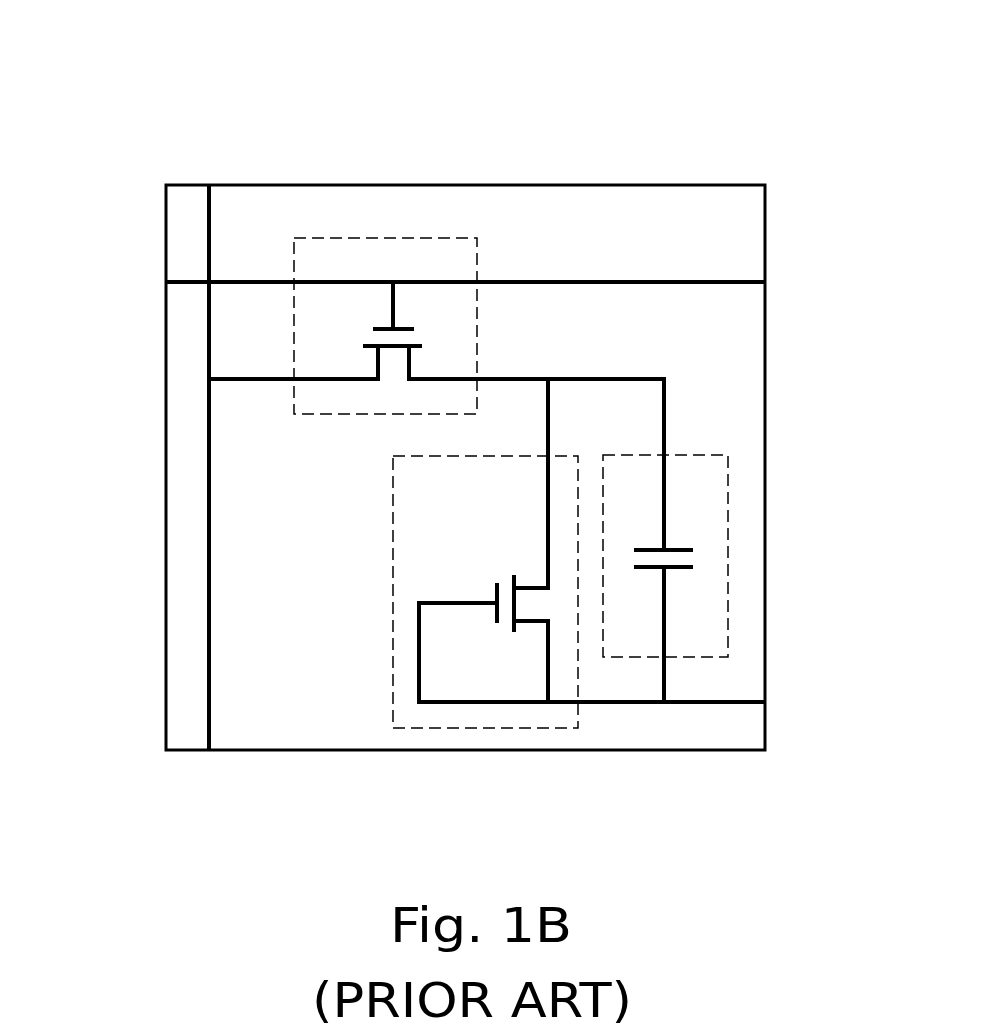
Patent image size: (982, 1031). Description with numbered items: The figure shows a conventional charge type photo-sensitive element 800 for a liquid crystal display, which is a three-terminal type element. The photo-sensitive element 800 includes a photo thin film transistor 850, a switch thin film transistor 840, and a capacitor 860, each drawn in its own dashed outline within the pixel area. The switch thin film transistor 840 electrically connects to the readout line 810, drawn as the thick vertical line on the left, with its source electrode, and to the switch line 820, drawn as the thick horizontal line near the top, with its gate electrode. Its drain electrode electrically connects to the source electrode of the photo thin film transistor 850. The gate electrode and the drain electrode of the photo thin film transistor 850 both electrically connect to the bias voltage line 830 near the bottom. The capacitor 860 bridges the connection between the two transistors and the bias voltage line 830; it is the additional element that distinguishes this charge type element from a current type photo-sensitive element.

The charge type photo-sensitive element 800 is at (741, 163).
The readout line 810 is at (209, 687).
The switch line 820 is at (184, 280).
The bias voltage line 830 is at (715, 702).
The switch thin film transistor 840 is at (323, 414).
The photo thin film transistor 850 is at (393, 590).
The capacitor 860 is at (728, 557).